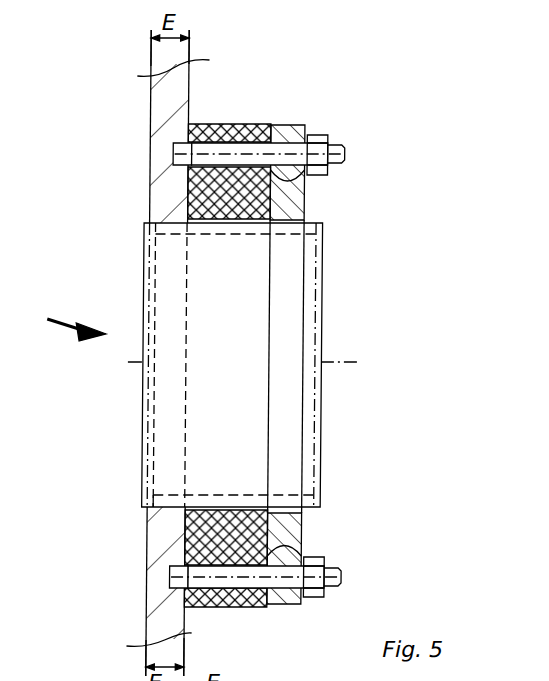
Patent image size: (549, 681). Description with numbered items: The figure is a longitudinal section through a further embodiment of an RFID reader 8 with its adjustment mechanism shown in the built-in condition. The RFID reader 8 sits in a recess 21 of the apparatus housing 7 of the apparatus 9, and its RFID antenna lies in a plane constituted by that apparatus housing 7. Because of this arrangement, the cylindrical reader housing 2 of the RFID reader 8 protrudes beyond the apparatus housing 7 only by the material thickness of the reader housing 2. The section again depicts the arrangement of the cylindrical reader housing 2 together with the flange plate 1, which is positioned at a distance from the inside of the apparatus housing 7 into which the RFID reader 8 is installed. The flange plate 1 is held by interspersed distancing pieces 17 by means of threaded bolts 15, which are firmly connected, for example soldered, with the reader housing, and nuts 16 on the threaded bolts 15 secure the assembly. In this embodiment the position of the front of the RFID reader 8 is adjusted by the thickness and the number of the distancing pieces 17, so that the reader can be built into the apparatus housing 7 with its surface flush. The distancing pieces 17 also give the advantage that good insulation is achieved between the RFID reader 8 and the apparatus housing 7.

The flange plate 1 is at (292, 184).
The reader housing 2 is at (147, 270).
The apparatus housing 7 is at (168, 188).
The RFID reader 8 is at (68, 321).
The apparatus 9 is at (147, 126).
The threaded bolts 15 is at (348, 149).
The nuts 16 is at (329, 137).
The distancing pieces 17 is at (198, 125).
The recess 21 is at (178, 502).